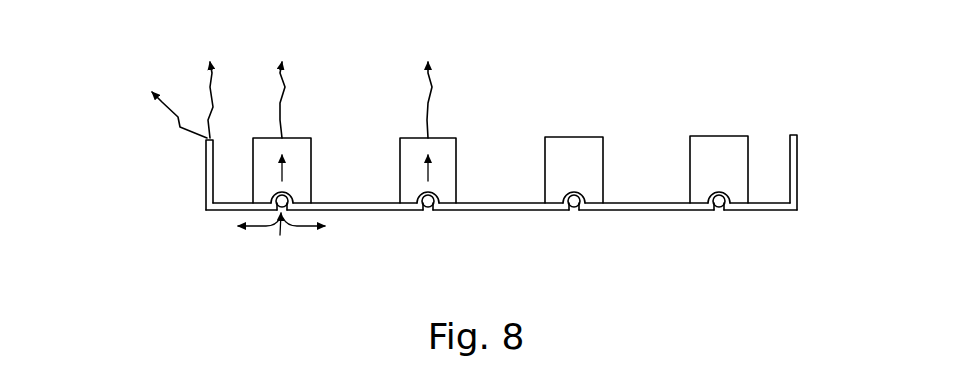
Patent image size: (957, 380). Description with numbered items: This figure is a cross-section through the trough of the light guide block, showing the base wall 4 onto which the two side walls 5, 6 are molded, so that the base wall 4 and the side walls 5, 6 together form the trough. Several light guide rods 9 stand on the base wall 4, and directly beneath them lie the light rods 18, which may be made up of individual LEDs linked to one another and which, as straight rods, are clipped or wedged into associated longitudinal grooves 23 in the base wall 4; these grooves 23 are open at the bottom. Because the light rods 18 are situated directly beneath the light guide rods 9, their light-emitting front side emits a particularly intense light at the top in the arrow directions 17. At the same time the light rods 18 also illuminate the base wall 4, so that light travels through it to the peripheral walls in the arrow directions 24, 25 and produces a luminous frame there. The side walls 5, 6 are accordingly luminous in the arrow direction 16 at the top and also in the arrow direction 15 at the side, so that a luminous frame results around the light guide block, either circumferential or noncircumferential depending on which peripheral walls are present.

The base wall 4 is at (638, 210).
The side wall 5 is at (798, 172).
The side wall 6 is at (207, 168).
The light guide rod 9 is at (562, 145).
The arrow direction 15 is at (162, 108).
The arrow direction 16 is at (210, 78).
The arrow directions 17 is at (430, 82).
The light rod 18 is at (280, 235).
The longitudinal groove 23 is at (422, 187).
The arrow direction 24 is at (290, 180).
The arrow direction 25 is at (266, 226).